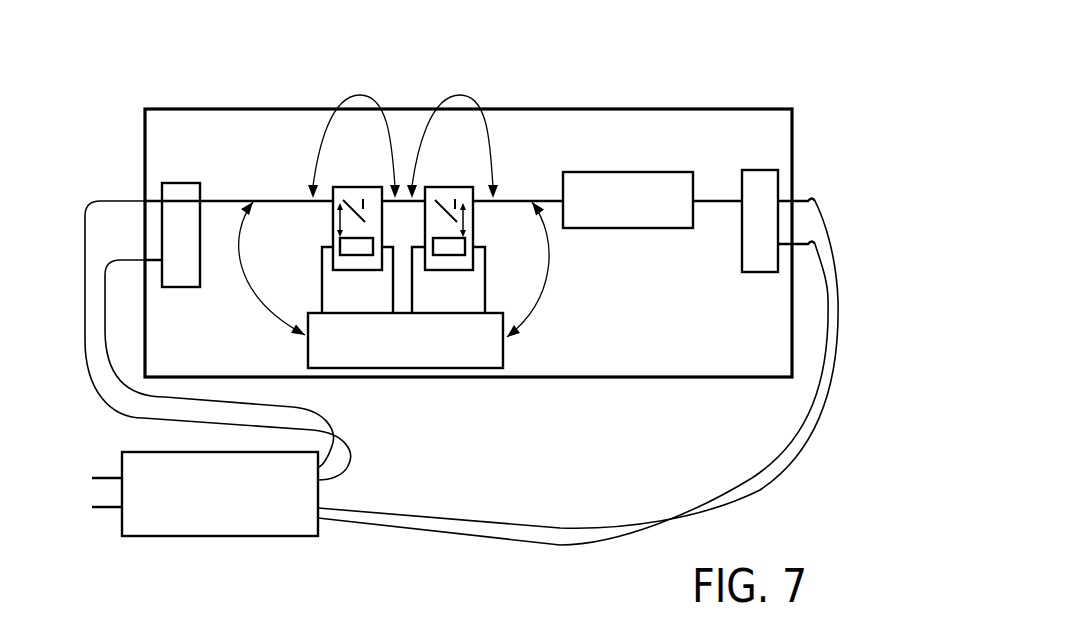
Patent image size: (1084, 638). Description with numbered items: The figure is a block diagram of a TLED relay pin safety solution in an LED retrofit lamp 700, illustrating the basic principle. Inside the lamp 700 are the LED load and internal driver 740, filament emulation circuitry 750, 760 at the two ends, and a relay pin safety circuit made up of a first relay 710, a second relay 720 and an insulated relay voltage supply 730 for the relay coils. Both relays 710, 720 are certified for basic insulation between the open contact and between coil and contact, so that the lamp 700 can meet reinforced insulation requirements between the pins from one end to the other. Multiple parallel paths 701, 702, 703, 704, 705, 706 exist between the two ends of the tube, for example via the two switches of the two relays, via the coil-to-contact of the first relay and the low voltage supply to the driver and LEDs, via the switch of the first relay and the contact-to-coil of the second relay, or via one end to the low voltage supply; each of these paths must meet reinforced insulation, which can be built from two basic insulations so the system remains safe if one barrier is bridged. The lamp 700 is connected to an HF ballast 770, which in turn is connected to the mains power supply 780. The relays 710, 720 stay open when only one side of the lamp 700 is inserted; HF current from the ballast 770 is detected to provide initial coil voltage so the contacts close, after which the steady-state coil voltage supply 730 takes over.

The lamp 700 is at (660, 98).
The parallel path 701 is at (245, 295).
The parallel path 702 is at (337, 220).
The parallel path 703 is at (360, 95).
The parallel path 704 is at (460, 95).
The parallel path 705 is at (465, 218).
The parallel path 706 is at (555, 300).
The first relay 710 is at (355, 187).
The second relay 720 is at (447, 187).
The relay voltage supply 730 is at (410, 370).
The LED load and internal driver 740 is at (628, 230).
The filament emulation circuitry 750 is at (758, 274).
The filament emulation circuitry 760 is at (178, 183).
The ballast 770 is at (222, 538).
The mains power supply 780 is at (97, 492).